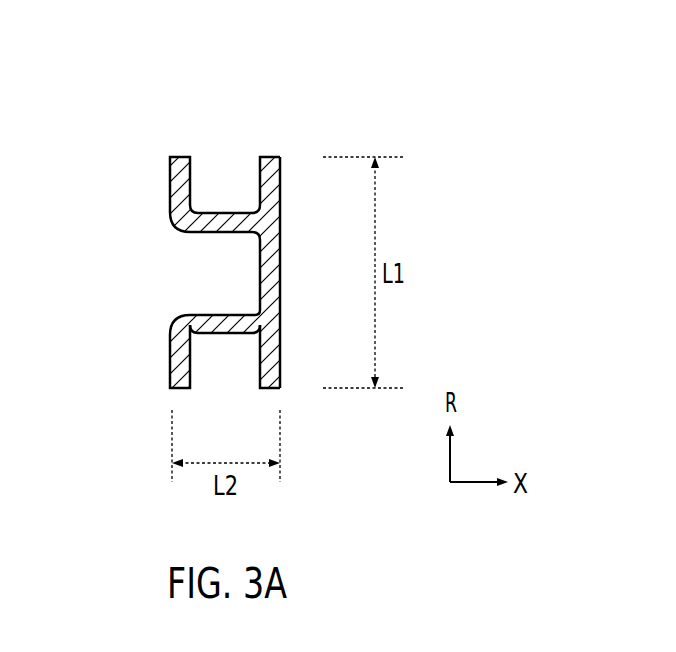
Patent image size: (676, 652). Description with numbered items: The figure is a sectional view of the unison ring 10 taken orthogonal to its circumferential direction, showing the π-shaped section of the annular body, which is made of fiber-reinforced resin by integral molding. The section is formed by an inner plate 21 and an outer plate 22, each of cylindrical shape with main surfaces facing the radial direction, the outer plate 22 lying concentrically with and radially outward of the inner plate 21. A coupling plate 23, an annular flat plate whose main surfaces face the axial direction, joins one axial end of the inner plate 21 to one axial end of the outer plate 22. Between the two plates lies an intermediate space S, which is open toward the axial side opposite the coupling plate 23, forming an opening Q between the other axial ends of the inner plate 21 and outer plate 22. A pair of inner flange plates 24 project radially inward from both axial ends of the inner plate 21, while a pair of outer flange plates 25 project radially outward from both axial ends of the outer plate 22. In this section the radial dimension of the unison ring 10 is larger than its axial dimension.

The unison ring 10 is at (176, 101).
The inner plate 21 is at (223, 334).
The outer plate 22 is at (220, 212).
The coupling plate 23 is at (283, 269).
The inner flange plates 24 is at (170, 357).
The outer flange plates 25 is at (170, 180).
The opening Q is at (180, 268).
The intermediate space S is at (229, 290).